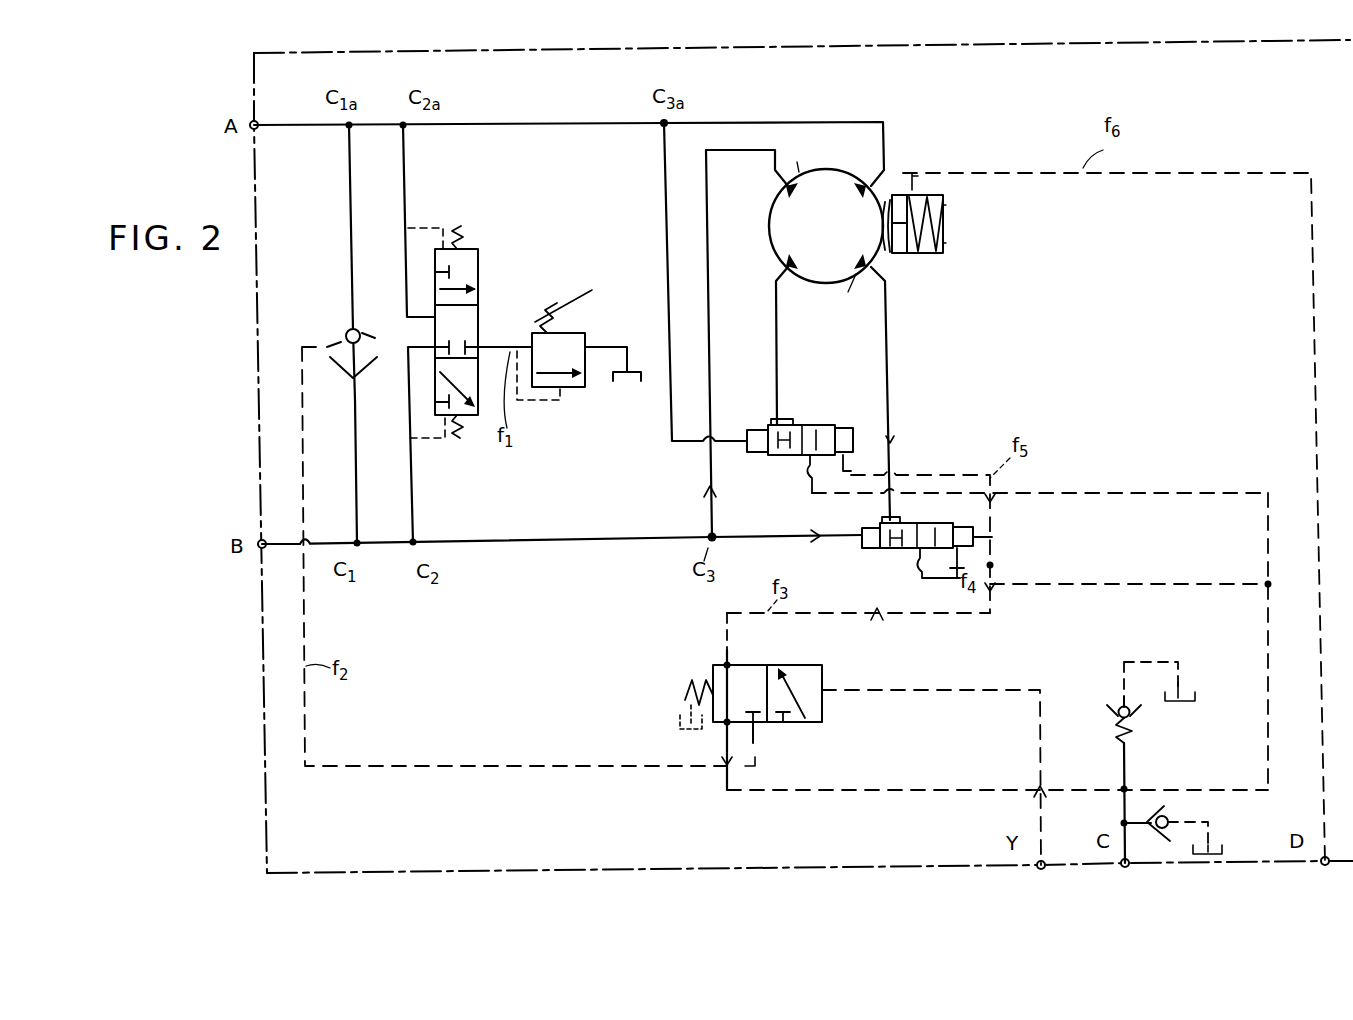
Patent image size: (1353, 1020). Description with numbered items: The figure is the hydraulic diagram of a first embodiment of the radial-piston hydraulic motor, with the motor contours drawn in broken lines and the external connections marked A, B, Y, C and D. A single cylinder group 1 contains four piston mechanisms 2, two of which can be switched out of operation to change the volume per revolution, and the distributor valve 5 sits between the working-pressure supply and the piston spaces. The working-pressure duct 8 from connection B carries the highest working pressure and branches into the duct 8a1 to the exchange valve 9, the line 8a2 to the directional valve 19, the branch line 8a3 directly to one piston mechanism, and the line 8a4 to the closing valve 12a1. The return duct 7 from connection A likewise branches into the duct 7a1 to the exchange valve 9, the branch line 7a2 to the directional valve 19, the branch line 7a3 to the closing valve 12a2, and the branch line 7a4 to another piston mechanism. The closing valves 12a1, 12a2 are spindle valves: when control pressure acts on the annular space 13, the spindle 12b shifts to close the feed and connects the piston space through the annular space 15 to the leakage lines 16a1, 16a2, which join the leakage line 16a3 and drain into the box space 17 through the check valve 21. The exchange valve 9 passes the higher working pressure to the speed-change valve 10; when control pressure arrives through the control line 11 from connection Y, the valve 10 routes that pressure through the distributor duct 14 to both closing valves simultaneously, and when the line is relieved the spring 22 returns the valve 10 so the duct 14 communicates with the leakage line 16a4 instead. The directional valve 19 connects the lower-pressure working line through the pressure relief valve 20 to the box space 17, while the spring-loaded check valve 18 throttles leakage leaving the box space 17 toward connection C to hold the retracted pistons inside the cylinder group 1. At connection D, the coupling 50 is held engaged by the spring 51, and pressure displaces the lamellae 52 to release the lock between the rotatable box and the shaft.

The cylinder group 1 is at (866, 215).
The piston mechanisms 2 is at (810, 326).
The distributor valve 5 is at (799, 154).
The duct 7 is at (556, 120).
The duct 7a1 is at (324, 227).
The branch line 7a2 is at (446, 221).
The branch line 7a3 is at (668, 200).
The branch line 7a4 is at (750, 122).
The duct 8 is at (552, 563).
The duct 8a1 is at (381, 471).
The line 8a2 is at (450, 444).
The branch line 8a3 is at (708, 482).
The line 8a4 is at (787, 525).
The exchange valve 9 is at (345, 335).
The speed-change valve 10 is at (745, 668).
The control line 11 is at (966, 688).
The closing valve 12a1 is at (1000, 539).
The closing valve 12a2 is at (885, 387).
The spindle 12b is at (930, 525).
The annular space 13 is at (889, 441).
The distributor duct 14 is at (877, 618).
The annular space 15 is at (812, 490).
The leakage line 16a1 is at (1131, 575).
The leakage line 16a2 is at (1118, 478).
The leakage line 16a3 is at (1237, 641).
The leakage line 16a4 is at (874, 790).
The box space 17 is at (325, 625).
The spring-loaded check valve 18 is at (1120, 705).
The directional valve 19 is at (447, 330).
The pressure relief valve 20 is at (540, 332).
The check valve 21 is at (1164, 814).
The spring 22 is at (690, 690).
The coupling 50 is at (943, 258).
The spring 51 is at (940, 244).
The lamellae 52 is at (889, 197).